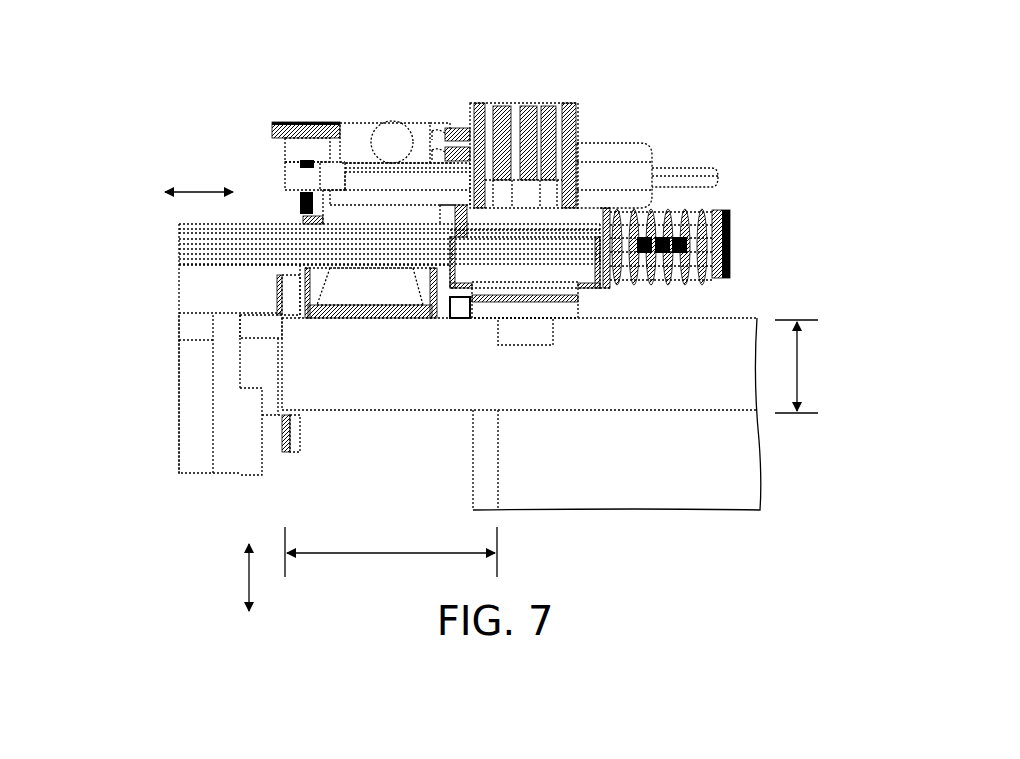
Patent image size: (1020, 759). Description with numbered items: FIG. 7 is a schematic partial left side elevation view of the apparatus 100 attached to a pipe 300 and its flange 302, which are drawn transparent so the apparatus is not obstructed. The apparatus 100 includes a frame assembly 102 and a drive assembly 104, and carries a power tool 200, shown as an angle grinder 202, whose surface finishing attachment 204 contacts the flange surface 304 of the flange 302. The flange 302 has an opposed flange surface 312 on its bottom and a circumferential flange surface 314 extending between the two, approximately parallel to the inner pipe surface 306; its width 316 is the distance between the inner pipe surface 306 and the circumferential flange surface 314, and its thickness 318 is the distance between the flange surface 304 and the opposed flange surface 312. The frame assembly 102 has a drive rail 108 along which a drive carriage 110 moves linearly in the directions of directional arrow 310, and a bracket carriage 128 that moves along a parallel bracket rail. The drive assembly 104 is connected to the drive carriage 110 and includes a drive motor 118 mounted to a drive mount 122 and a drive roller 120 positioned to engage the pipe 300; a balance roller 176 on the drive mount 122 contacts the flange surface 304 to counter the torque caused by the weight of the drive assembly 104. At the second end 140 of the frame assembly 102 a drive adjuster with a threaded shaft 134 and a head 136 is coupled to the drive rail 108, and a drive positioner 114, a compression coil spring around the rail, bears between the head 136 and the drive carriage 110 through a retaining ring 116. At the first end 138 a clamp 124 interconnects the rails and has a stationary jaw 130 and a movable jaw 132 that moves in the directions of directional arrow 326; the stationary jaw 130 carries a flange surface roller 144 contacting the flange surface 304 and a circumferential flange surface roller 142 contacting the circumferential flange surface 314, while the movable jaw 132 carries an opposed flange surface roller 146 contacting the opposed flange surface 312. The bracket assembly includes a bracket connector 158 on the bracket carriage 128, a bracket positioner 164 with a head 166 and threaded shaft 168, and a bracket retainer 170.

The apparatus 100 is at (160, 105).
The frame assembly 102 is at (153, 207).
The drive assembly 104 is at (473, 101).
The drive rail 108 is at (179, 229).
The drive carriage 110 is at (508, 273).
The drive positioner 114 is at (690, 270).
The retaining ring 116 is at (607, 290).
The drive motor 118 is at (527, 102).
The drive roller 120 is at (545, 347).
The drive mount 122 is at (565, 320).
The clamp 124 is at (179, 400).
The bracket carriage 128 is at (313, 216).
The stationary jaw 130 is at (179, 292).
The movable jaw 132 is at (245, 478).
The threaded shaft 134 is at (668, 255).
The head 136 is at (732, 238).
The first end 138 is at (96, 264).
The second end 140 is at (747, 204).
The circumferential flange surface roller 142 is at (240, 323).
The flange surface roller 144 is at (277, 293).
The opposed flange surface roller 146 is at (290, 455).
The bracket connector 158 is at (348, 125).
The bracket positioner 164 is at (308, 124).
The head 166 is at (276, 128).
The threaded shaft 168 is at (300, 200).
The bracket retainer 170 is at (393, 121).
The balance roller 176 is at (458, 320).
The power tool 200 is at (647, 133).
The angle grinder 202 is at (600, 142).
The surface finishing attachment 204 is at (390, 307).
The pipe 300 is at (777, 470).
The flange 302 is at (442, 423).
The flange surface 304 is at (318, 320).
The inner pipe surface 306 is at (500, 477).
The directional arrow 310 is at (195, 191).
The opposed flange surface 312 is at (335, 412).
The circumferential flange surface 314 is at (278, 370).
The width 316 is at (334, 560).
The thickness 318 is at (800, 358).
The directional arrow 326 is at (248, 580).